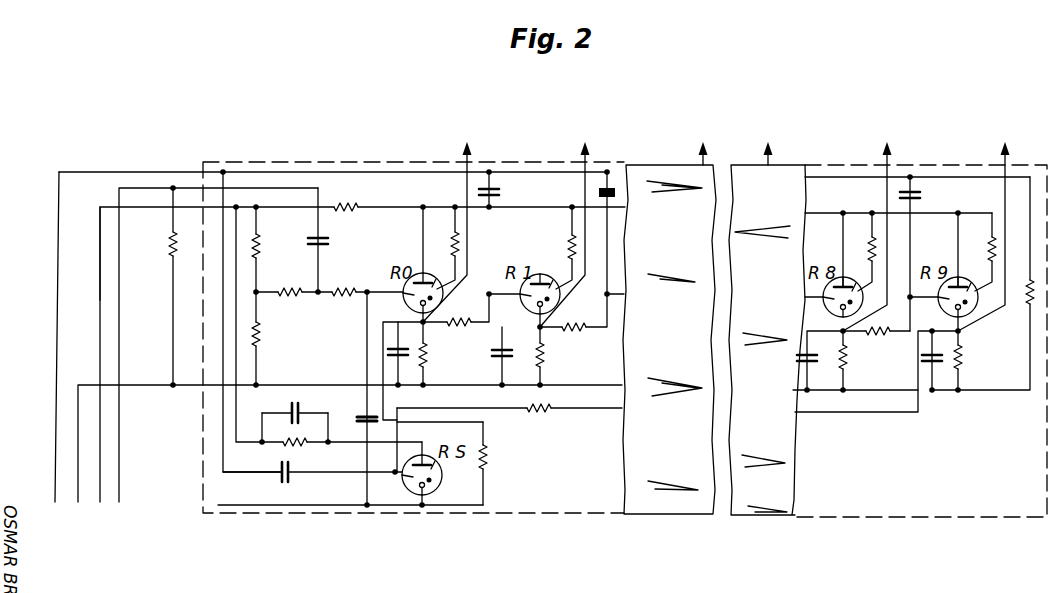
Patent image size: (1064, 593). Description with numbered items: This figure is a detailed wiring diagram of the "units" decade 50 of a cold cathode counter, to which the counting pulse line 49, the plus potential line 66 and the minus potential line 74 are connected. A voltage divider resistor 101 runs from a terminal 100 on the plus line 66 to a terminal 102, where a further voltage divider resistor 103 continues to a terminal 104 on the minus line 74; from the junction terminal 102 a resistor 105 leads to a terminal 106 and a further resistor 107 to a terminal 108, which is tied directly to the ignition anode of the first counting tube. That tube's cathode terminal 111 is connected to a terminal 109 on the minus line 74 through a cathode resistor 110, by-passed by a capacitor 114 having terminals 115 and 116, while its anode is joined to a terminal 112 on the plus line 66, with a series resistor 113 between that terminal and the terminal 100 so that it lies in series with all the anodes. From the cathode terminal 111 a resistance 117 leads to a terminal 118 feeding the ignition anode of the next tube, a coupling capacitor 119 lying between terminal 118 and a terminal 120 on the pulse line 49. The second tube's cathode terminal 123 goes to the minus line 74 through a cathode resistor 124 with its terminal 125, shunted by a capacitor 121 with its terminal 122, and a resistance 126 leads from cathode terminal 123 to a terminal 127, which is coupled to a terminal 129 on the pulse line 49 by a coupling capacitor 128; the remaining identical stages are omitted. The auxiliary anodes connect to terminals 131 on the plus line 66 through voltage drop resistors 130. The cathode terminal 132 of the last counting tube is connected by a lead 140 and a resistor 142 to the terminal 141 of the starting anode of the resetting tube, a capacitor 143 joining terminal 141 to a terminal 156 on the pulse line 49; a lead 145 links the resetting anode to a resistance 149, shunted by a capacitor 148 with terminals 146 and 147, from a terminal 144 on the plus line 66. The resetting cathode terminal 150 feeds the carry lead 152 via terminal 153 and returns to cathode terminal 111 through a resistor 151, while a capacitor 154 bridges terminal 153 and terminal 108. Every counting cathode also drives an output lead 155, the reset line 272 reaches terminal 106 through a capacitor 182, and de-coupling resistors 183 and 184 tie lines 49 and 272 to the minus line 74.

The counting pulse line 49 is at (58, 302).
The units decade 50 is at (942, 500).
The plus potential line 66 is at (933, 232).
The minus potential line 74 is at (873, 378).
The terminal 100 is at (258, 212).
The voltage divider resistor 101 is at (260, 246).
The terminal 102 is at (258, 300).
The voltage divider resistor 103 is at (259, 333).
The terminal 104 is at (257, 387).
The resistor 105 is at (290, 296).
The terminal 106 is at (319, 288).
The resistor 107 is at (335, 297).
The terminal 108 is at (367, 289).
The terminal 109 is at (425, 385).
The cathode resistor 110 is at (427, 355).
The cathode terminal 111 is at (425, 328).
The terminal 112 is at (423, 207).
The series resistor 113 is at (353, 207).
The capacitor 114 is at (387, 352).
The terminal 115 is at (397, 409).
The terminal 116 is at (398, 322).
The resistance 117 is at (458, 327).
The terminal 118 is at (489, 295).
The coupling capacitor 119 is at (500, 192).
The terminal 120 is at (489, 172).
The capacitor 121 is at (504, 356).
The terminal 122 is at (502, 388).
The cathode terminal 123 is at (542, 335).
The cathode resistor 124 is at (543, 365).
The terminal 125 is at (542, 387).
The resistance 126 is at (580, 330).
The terminal 127 is at (624, 297).
The coupling capacitor 128 is at (617, 193).
The terminal 129 is at (607, 172).
The voltage drop resistors 130 is at (1007, 237).
The terminals 131 is at (572, 213).
The cathode terminal 132 is at (960, 334).
The lead 140 is at (924, 330).
The terminal 141 is at (395, 474).
The resistor 142 is at (540, 412).
The capacitor 143 is at (292, 480).
The terminal 144 is at (238, 205).
The lead 145 is at (237, 367).
The terminal 146 is at (262, 443).
The terminal 147 is at (330, 445).
The capacitor 148 is at (300, 411).
The resistance 149 is at (300, 447).
The terminal 150 is at (422, 508).
The resistor 151 is at (487, 458).
The carry lead 152 is at (218, 505).
The terminal 153 is at (366, 507).
The capacitor 154 is at (355, 421).
The output lead 155 is at (1021, 130).
The terminal 156 is at (223, 172).
The capacitor 182 is at (328, 241).
The de-coupling resistor 183 is at (1027, 305).
The de-coupling resistor 184 is at (170, 245).
The reset line 272 is at (119, 480).